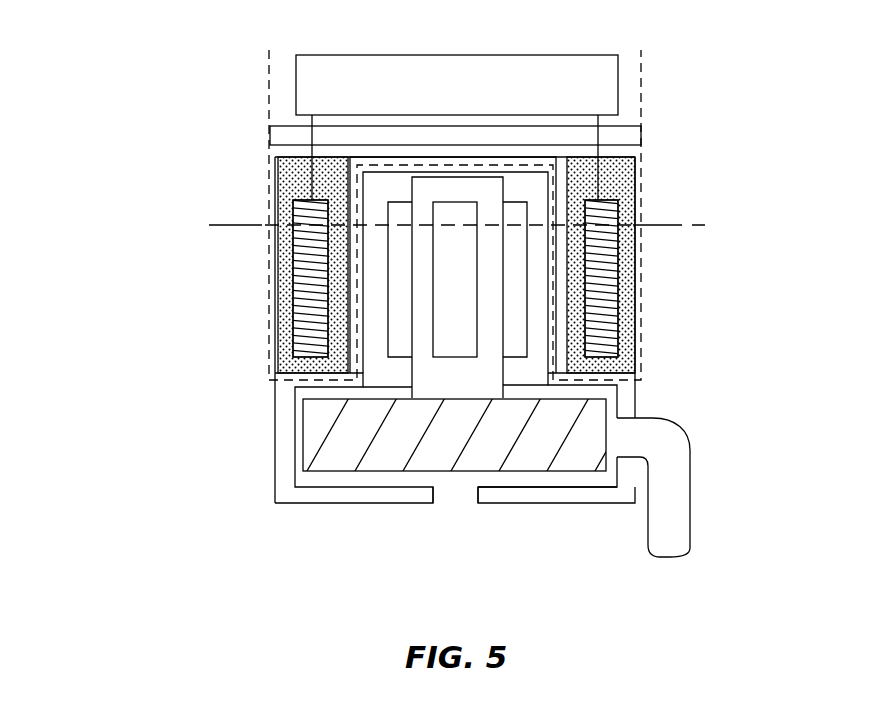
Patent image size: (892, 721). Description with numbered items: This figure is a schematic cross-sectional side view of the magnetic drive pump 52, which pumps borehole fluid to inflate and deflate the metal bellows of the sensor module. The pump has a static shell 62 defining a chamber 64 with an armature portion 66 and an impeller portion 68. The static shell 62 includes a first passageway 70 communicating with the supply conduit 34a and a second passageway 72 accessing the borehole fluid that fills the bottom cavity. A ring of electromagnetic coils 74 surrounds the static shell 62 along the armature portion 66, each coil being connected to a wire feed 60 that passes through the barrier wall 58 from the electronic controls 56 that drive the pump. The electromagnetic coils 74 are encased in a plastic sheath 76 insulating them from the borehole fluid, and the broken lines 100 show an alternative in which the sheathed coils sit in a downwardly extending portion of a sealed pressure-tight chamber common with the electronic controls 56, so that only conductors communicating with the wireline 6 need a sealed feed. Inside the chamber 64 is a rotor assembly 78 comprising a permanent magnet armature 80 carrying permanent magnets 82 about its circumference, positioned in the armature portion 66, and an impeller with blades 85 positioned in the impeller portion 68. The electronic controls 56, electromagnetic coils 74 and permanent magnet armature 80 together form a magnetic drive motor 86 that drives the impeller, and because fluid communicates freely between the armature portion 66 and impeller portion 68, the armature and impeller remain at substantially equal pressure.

The magnetic drive pump 52 is at (138, 150).
The electronic controls 56 is at (457, 85).
The barrier wall 58 is at (633, 135).
The wire feeds 60 is at (603, 137).
The static shell 62 is at (280, 393).
The chamber 64 is at (527, 368).
The armature portion 66 is at (537, 209).
The impeller portion 68 is at (315, 478).
The first passageway 70 is at (630, 437).
The second passageway 72 is at (458, 497).
The electromagnetic coils 74 is at (605, 240).
The plastic sheath 76 is at (293, 167).
The rotor assembly 78 is at (480, 382).
The permanent magnet armature 80 is at (410, 375).
The permanent magnets 82 is at (513, 308).
The blades 85 is at (403, 445).
The magnetic drive motor 86 is at (643, 106).
The broken lines 100 is at (268, 242).
The supply conduit 34a is at (675, 522).
The wireline 6 is at (209, 225).